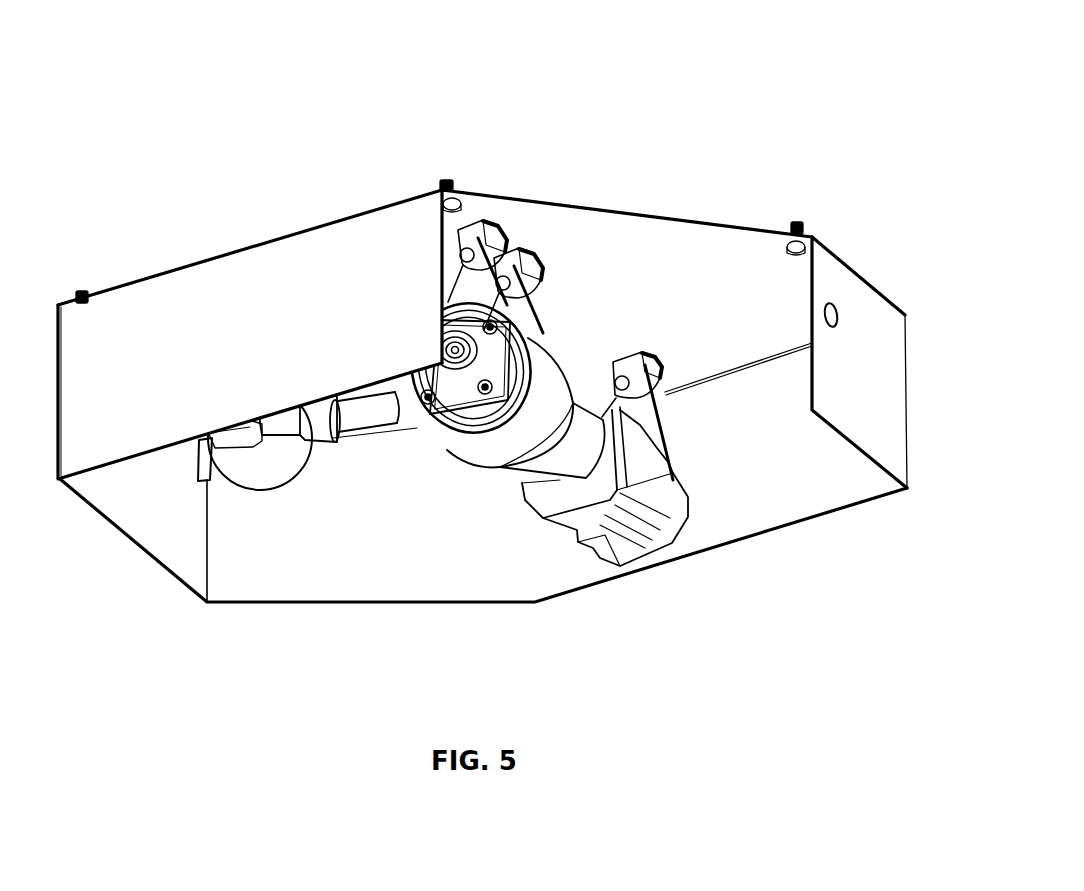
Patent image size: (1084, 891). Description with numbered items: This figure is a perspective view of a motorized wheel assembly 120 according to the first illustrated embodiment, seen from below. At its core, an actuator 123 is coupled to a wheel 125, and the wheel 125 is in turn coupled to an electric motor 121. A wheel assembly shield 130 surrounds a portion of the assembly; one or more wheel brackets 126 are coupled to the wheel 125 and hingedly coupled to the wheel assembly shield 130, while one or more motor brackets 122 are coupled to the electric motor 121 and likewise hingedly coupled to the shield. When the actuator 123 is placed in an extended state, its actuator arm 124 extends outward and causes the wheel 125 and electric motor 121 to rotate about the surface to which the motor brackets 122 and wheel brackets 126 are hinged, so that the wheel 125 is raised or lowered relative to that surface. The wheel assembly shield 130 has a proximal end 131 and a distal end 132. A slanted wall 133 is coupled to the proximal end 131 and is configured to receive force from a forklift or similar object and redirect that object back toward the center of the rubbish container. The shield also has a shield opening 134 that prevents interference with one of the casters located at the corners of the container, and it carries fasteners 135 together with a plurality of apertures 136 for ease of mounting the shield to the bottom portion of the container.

The motorized wheel assembly 120 is at (796, 57).
The electric motor 121 is at (648, 477).
The motor bracket 122 is at (643, 428).
The actuator 123 is at (262, 490).
The actuator arm 124 is at (383, 413).
The wheel 125 is at (538, 355).
The wheel bracket 126 is at (463, 297).
The wheel assembly shield 130 is at (265, 242).
The proximal end 131 is at (137, 543).
The distal end 132 is at (895, 301).
The slanted wall 133 is at (327, 603).
The shield opening 134 is at (683, 247).
The fasteners 135 is at (450, 180).
The aperture 136 is at (838, 314).